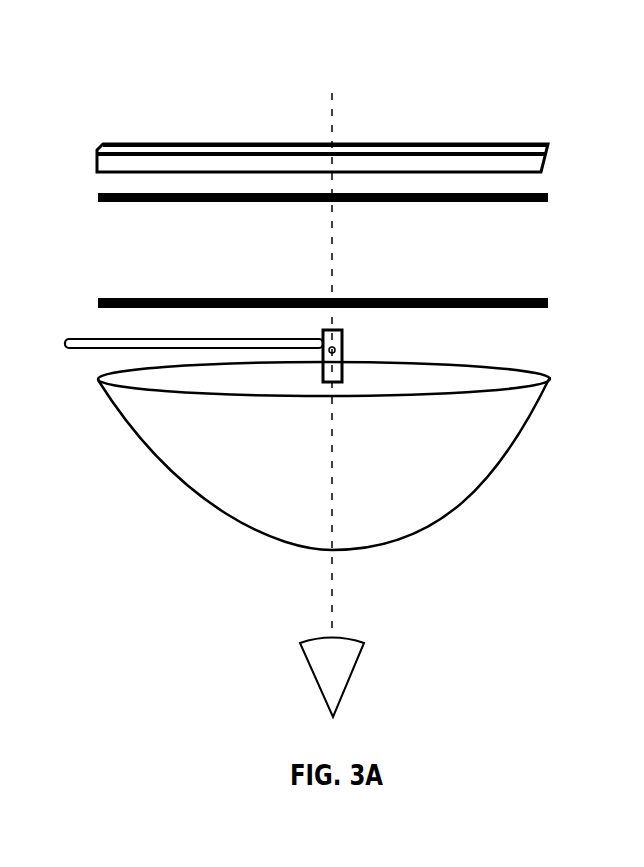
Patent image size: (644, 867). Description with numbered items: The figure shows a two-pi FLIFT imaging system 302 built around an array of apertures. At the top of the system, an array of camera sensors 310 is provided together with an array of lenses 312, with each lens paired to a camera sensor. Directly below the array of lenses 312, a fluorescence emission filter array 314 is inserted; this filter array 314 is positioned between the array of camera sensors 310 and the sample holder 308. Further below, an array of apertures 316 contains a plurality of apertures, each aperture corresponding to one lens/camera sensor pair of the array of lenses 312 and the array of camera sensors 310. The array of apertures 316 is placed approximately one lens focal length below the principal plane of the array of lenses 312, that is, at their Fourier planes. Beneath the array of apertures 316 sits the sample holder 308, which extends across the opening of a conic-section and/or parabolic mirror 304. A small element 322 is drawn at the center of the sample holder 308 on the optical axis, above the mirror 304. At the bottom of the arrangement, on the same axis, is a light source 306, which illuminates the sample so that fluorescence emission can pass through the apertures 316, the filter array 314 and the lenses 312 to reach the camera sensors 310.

The 2π-FLIFT imaging system 302 is at (112, 64).
The conic-section and/or parabolic mirror 304 is at (480, 485).
The light source 306 is at (364, 647).
The sample holder 308 is at (323, 335).
The array of camera sensors 310 is at (550, 160).
The array of lenses 312 is at (368, 136).
The fluorescence emission filter array 314 is at (548, 198).
The array of apertures 316 is at (548, 304).
The mount 322 is at (342, 357).